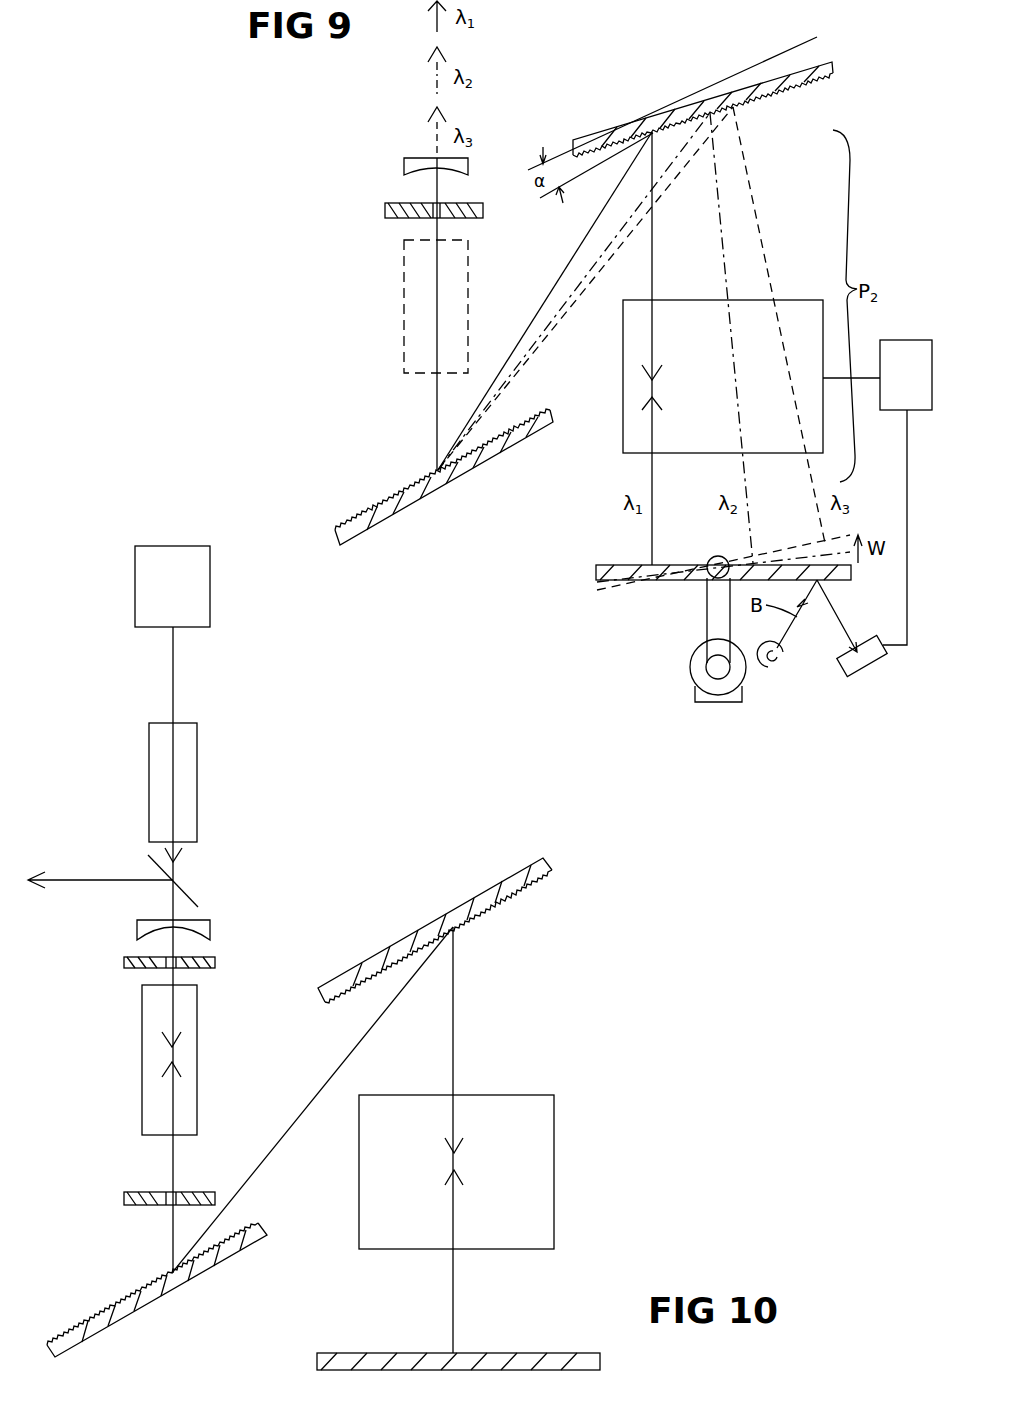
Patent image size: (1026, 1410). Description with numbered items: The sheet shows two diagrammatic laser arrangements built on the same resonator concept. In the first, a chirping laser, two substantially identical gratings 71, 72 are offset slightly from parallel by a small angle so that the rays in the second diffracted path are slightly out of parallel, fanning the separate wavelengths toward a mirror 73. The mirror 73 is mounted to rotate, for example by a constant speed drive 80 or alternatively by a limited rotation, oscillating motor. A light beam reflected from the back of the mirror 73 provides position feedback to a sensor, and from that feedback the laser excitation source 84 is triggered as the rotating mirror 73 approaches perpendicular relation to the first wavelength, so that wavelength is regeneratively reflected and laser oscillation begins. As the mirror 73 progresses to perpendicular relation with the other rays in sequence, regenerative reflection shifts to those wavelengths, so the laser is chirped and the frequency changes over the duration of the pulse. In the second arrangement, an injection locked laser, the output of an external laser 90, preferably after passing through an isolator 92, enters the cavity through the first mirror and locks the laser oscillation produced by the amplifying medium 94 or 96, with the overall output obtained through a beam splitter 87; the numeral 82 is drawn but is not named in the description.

In FIG. 9, the grating 71 is at (539, 413).
In FIG. 9, the grating 72 is at (807, 84).
In FIG. 9, the mirror 73 is at (610, 562).
In FIG. 9, the constant speed drive 80 is at (702, 673).
In FIG. 9, the detector 82 is at (868, 667).
In FIG. 9, the laser excitation source 84 is at (910, 340).
In FIG. 10, the beam splitter 87 is at (188, 893).
In FIG. 10, the external laser 90 is at (140, 600).
In FIG. 10, the isolator 92 is at (148, 763).
In FIG. 10, the amplifying medium 94 is at (141, 1053).
In FIG. 10, the amplifying medium 96 is at (555, 1120).